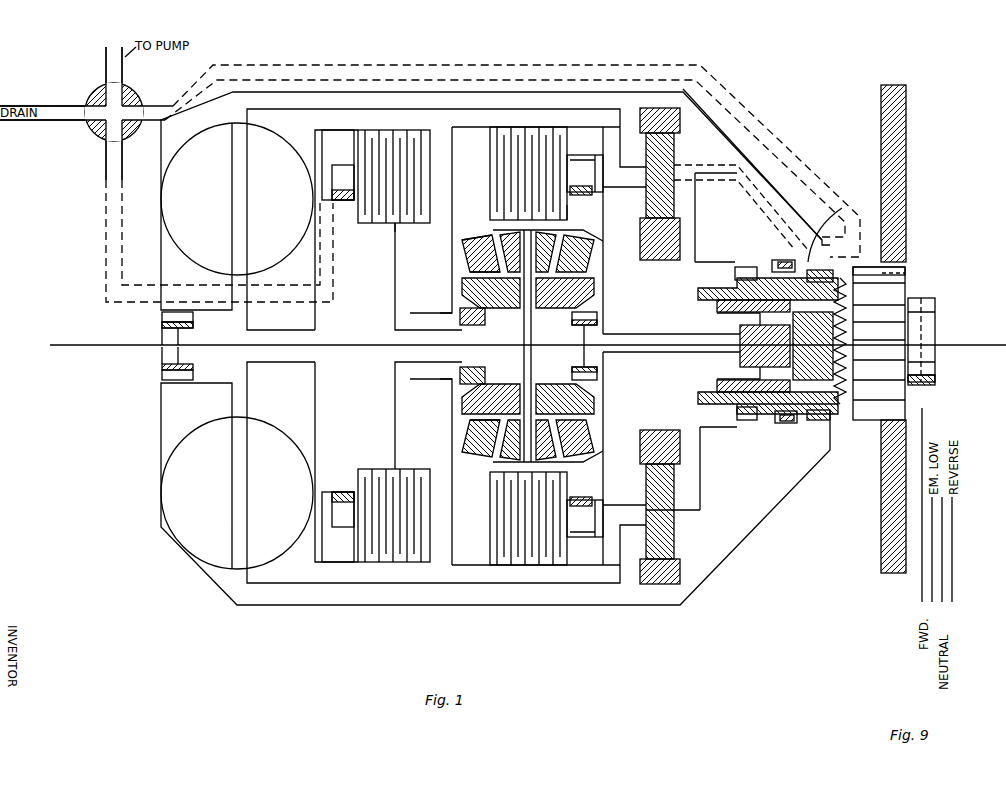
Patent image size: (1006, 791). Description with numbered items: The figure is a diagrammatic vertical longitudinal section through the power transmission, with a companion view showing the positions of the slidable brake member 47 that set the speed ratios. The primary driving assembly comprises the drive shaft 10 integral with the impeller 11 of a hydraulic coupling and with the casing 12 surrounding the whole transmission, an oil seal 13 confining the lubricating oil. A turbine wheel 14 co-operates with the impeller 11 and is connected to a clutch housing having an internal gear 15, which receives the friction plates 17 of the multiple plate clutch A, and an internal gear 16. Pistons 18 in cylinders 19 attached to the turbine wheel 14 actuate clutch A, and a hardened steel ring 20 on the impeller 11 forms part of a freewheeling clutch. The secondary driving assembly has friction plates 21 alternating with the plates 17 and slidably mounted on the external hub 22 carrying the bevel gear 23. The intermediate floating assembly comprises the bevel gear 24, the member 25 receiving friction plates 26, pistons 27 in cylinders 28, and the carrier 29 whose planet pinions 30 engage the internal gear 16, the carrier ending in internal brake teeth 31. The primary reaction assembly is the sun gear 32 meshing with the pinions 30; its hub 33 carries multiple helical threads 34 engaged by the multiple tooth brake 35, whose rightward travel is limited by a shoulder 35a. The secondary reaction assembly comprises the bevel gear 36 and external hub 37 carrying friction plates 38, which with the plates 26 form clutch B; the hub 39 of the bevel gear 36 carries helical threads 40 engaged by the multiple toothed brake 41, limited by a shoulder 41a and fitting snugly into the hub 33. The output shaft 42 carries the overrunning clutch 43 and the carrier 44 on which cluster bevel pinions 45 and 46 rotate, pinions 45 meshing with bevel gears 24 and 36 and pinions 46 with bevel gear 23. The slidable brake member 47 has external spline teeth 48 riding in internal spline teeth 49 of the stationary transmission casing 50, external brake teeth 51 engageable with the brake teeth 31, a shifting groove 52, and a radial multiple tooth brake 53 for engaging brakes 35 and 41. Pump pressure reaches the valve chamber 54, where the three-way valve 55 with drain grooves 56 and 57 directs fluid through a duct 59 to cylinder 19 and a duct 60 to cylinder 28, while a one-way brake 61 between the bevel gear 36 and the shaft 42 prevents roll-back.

The drive shaft 10 is at (102, 345).
The impeller 11 is at (172, 171).
The casing 12 is at (787, 194).
The oil seal 13 is at (838, 218).
The turbine wheel 14 is at (262, 150).
The internal gear 15 is at (364, 134).
The internal gear 16 is at (645, 108).
The friction plates 17 is at (405, 137).
The pistons 18 is at (345, 203).
The cylinders 19 is at (327, 165).
The hardened steel ring 20 is at (180, 309).
The friction plates 21 is at (433, 225).
The external hub 22 is at (375, 227).
The bevel gear 23 is at (487, 321).
The bevel gear 24 is at (480, 236).
The member 25 is at (500, 131).
The friction plates 26 is at (536, 135).
The pistons 27 is at (580, 166).
The cylinders 28 is at (600, 189).
The carrier 29 is at (697, 204).
The planet pinions 30 is at (668, 163).
The internal brake teeth 31 is at (778, 262).
The sun gear 32 is at (658, 288).
The hub 33 is at (712, 320).
The multiple helical threads 34 is at (810, 420).
The multiple tooth brake 35 is at (709, 288).
The shoulder 35a is at (700, 296).
The bevel gear 36 is at (590, 264).
The external hub 37 is at (590, 232).
The friction plates 38 is at (490, 159).
The hub 39 is at (653, 353).
The multiple helical threads 40 is at (730, 402).
The multiple toothed brake 41 is at (835, 406).
The shoulder 41a is at (712, 329).
The output shaft 42 is at (966, 345).
The overrunning clutch 43 is at (197, 324).
The carrier 44 is at (532, 359).
The cluster bevel pinions 45 is at (503, 233).
The cluster bevel pinions 46 is at (573, 302).
The slidable brake member 47 is at (893, 304).
The external spline teeth 48 is at (912, 385).
The internal spline teeth 49 is at (900, 272).
The stationary transmission casing 50 is at (907, 168).
The external brake teeth 51 is at (742, 267).
The groove 52 is at (930, 324).
The radial multiple tooth brake 53 is at (855, 352).
The valve chamber 54 is at (128, 93).
The 3-way valve 55 is at (98, 130).
The drain groove 56 is at (110, 87).
The drain groove 57 is at (88, 108).
The duct 59 is at (105, 242).
The duct 60 is at (172, 143).
The one-way brake 61 is at (597, 313).
The multiple plate clutch A is at (412, 224).
The multiple plate clutch B is at (565, 209).